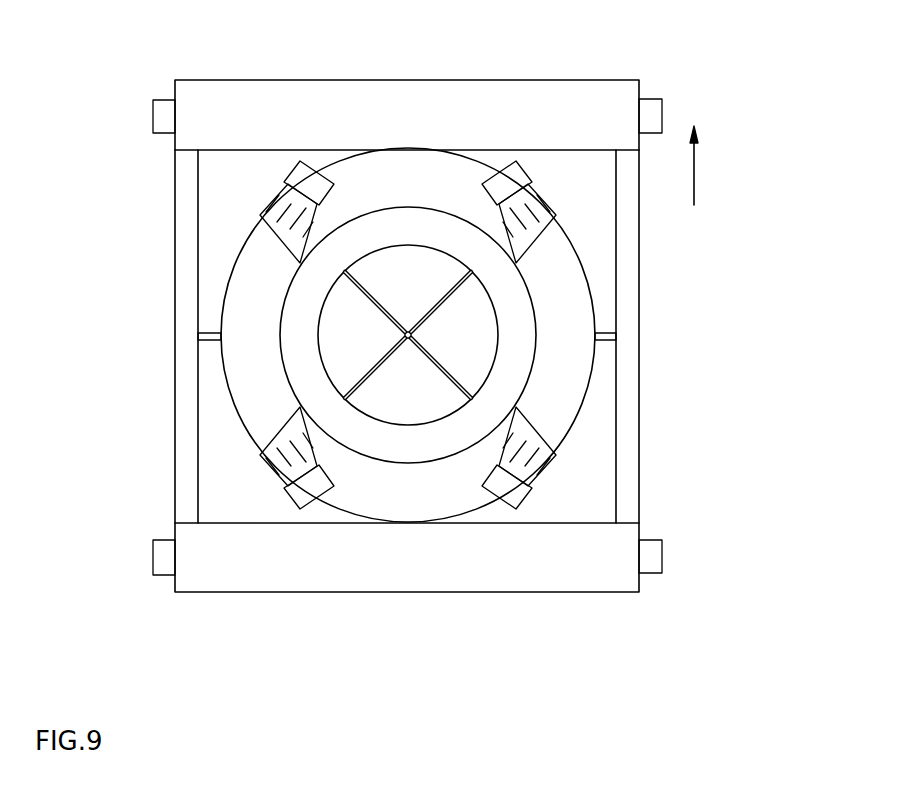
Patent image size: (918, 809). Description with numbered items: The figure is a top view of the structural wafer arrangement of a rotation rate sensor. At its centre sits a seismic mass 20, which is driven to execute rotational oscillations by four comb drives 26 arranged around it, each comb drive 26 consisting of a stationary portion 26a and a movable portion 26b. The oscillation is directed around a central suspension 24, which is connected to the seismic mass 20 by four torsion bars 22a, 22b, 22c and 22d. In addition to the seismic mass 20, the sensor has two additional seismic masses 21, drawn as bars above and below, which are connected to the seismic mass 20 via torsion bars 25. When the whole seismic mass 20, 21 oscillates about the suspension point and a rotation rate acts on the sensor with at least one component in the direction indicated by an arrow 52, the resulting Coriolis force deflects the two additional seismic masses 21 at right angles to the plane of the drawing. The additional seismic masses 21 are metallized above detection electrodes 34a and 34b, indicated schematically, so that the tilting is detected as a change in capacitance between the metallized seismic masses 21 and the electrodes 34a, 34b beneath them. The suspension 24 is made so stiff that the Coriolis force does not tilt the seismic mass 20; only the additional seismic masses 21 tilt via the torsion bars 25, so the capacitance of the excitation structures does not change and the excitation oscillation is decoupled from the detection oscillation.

The seismic mass 20 is at (568, 348).
The additional seismic mass 21 is at (377, 108).
The torsion bar 22a is at (438, 310).
The torsion bar 22b is at (457, 387).
The torsion bar 22c is at (373, 367).
The torsion bar 22d is at (377, 310).
The suspension 24 is at (423, 335).
The torsion bar 25 is at (600, 331).
The comb drive 26 is at (409, 267).
The stationary portion 26a is at (492, 170).
The movable portion 26b is at (262, 217).
The detection electrode 34a is at (662, 555).
The detection electrode 34b is at (662, 113).
The arrow 52 is at (696, 158).